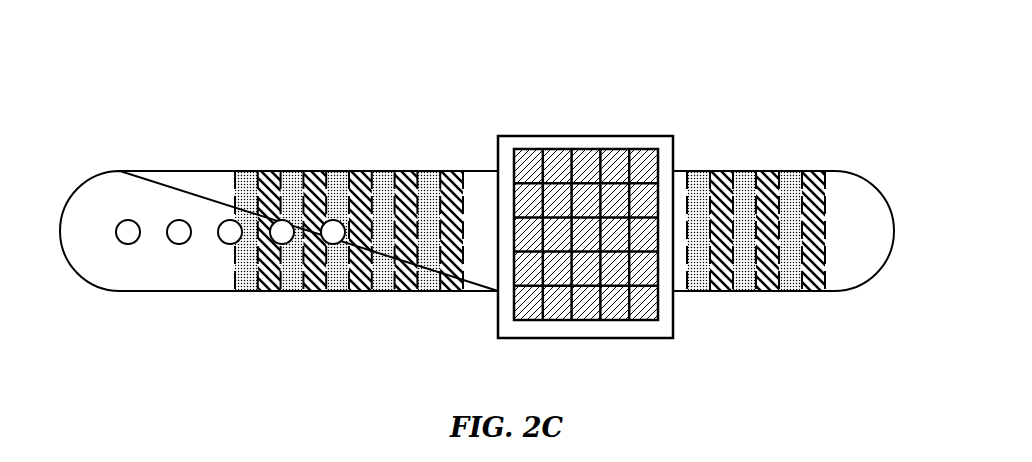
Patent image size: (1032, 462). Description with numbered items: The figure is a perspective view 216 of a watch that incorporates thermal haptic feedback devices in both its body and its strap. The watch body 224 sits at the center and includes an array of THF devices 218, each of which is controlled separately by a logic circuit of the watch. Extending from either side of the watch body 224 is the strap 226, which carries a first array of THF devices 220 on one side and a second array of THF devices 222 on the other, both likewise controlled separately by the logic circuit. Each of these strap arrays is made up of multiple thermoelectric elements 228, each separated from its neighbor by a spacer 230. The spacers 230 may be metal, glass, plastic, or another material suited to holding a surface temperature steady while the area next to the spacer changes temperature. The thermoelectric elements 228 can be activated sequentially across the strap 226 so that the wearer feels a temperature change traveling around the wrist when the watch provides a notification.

The perspective view 216 is at (256, 85).
The array of THF devices 218 is at (675, 112).
The first array of THF devices 220 is at (460, 317).
The second array of THF devices 222 is at (822, 328).
The watch body 224 is at (498, 150).
The strap 226 is at (190, 171).
The thermoelectric elements 228 is at (403, 171).
The spacer 230 is at (790, 171).